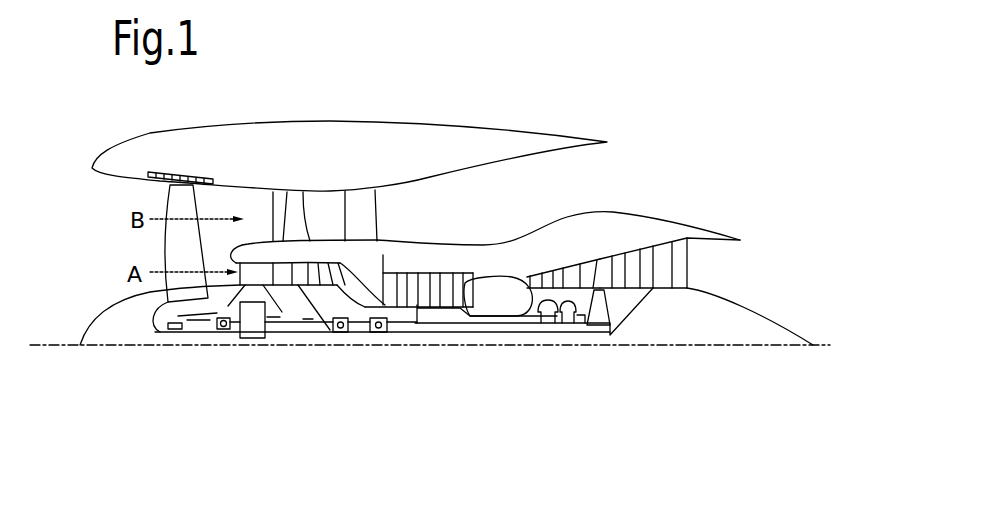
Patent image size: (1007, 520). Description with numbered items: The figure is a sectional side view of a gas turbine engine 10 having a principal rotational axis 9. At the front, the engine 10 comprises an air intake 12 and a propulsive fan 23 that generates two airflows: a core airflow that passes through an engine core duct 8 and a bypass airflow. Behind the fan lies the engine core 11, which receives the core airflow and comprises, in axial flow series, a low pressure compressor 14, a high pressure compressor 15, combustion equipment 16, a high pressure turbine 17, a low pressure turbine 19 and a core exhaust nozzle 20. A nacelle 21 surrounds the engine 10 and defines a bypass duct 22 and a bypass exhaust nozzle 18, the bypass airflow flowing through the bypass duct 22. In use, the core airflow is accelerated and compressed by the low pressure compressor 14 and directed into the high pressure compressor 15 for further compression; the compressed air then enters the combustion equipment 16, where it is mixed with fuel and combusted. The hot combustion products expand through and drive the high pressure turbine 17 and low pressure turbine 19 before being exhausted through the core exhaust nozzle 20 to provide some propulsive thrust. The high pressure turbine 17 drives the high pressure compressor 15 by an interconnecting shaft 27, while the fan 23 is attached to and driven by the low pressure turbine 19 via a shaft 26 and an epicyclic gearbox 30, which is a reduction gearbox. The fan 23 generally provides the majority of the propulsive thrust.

The engine core duct 8 is at (316, 298).
The principal rotational axis 9 is at (657, 347).
The gas turbine engine 10 is at (64, 163).
The engine core 11 is at (483, 256).
The air intake 12 is at (100, 214).
The low pressure compressor 14 is at (308, 193).
The high pressure compressor 15 is at (432, 288).
The combustion equipment 16 is at (503, 295).
The high pressure turbine 17 is at (552, 275).
The bypass exhaust nozzle 18 is at (662, 175).
The low pressure turbine 19 is at (663, 250).
The core exhaust nozzle 20 is at (720, 270).
The nacelle 21 is at (367, 137).
The bypass duct 22 is at (585, 190).
The propulsive fan 23 is at (170, 247).
The shaft 26 is at (432, 335).
The interconnecting shaft 27 is at (467, 325).
The epicyclic gearbox 30 is at (253, 320).